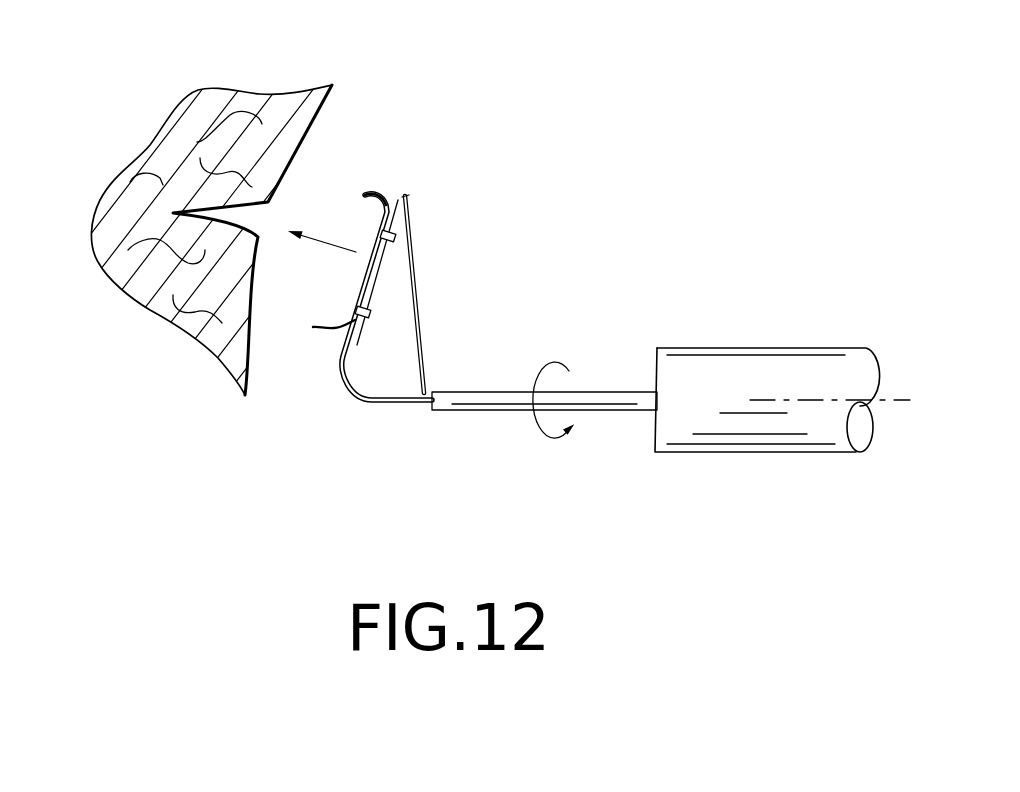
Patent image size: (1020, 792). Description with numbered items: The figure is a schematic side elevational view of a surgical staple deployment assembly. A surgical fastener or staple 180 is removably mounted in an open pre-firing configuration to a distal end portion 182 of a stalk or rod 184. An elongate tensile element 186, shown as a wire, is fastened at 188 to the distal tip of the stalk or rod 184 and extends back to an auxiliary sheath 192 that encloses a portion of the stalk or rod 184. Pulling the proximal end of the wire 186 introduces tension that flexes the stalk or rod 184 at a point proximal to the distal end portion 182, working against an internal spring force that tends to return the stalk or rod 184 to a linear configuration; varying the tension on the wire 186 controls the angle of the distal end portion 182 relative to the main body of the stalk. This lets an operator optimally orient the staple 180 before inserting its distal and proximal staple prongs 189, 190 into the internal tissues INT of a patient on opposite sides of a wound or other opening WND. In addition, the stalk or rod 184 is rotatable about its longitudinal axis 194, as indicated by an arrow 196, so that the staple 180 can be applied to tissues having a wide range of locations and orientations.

The surgical fastener or staple 180 is at (374, 259).
The distal end portion 182 is at (382, 273).
The stalk or rod 184 is at (380, 404).
The elongate tensile element 186 is at (421, 311).
The fastening point at distal tip 188 is at (420, 200).
The distal staple prong 189 is at (366, 194).
The proximal staple prong 190 is at (313, 328).
The auxiliary sheath 192 is at (483, 410).
The longitudinal axis 194 is at (901, 400).
The arrow 196 is at (540, 425).
The internal tissues INT is at (173, 128).
The wound or other opening WND is at (145, 309).